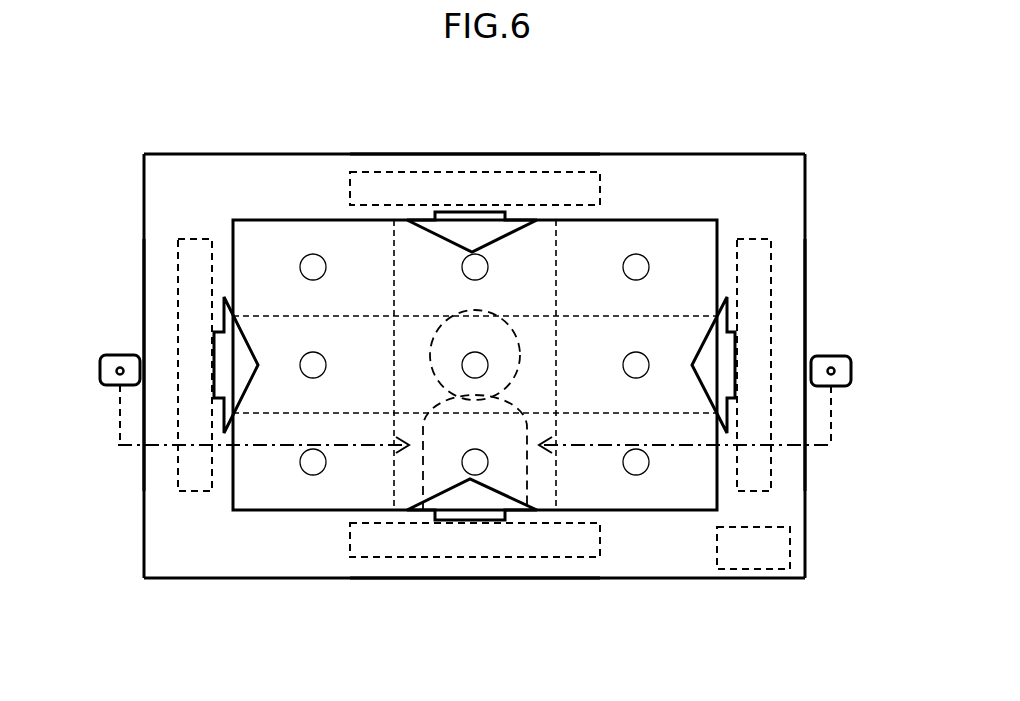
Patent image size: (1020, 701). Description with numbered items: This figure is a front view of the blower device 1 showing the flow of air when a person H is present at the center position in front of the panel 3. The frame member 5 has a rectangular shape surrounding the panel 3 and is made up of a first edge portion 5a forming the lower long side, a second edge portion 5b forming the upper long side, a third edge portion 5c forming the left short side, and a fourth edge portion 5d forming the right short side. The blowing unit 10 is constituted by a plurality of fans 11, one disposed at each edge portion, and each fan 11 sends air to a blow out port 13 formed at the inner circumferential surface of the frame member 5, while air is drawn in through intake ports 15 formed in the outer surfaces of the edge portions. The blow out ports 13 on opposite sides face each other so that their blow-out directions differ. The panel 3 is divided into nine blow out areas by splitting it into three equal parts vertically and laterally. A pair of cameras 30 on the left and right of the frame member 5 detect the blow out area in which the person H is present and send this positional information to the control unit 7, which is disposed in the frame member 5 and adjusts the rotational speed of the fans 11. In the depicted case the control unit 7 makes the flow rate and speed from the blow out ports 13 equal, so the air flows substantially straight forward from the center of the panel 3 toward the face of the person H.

The blower device 1 is at (838, 131).
The panel 3 is at (257, 240).
The frame member 5 is at (476, 371).
The first edge portion 5a is at (292, 575).
The second edge portion 5b is at (318, 160).
The third edge portion 5c is at (150, 251).
The fourth edge portion 5d is at (808, 250).
The control unit 7 is at (755, 572).
The blowing unit 10 is at (622, 544).
The fans 11 is at (583, 172).
The blow out ports 13 is at (391, 221).
The intake ports 15 is at (468, 152).
The cameras 30 is at (100, 371).
The person H is at (521, 355).